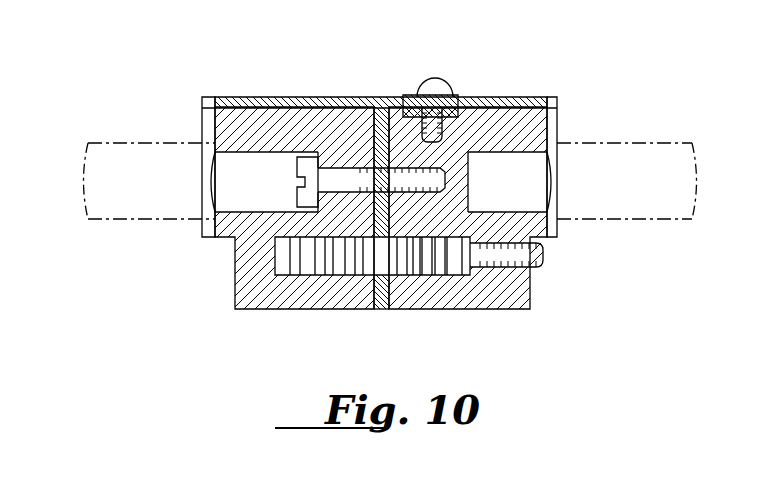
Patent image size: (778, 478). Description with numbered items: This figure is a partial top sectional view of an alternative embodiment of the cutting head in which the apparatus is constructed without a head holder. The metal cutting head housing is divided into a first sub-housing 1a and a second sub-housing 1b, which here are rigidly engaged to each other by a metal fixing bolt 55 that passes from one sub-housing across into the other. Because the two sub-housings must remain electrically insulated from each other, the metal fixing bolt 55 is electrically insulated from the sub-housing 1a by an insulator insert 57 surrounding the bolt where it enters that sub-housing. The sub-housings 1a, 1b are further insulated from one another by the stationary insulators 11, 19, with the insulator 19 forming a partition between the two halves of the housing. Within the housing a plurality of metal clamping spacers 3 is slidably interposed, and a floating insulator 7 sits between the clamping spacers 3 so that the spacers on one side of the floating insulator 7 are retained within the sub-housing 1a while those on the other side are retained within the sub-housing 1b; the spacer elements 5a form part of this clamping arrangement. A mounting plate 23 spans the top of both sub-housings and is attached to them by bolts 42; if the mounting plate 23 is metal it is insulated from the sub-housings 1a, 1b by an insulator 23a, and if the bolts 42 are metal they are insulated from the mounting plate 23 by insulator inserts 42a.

The first sub-housing 1a is at (262, 290).
The second sub-housing 1b is at (508, 285).
The metal clamping spacers 3 is at (318, 262).
The spring plates 5a is at (346, 268).
The floating insulator 7 is at (375, 255).
The stationary insulator 11 is at (381, 300).
The stationary insulator 19 is at (377, 175).
The mounting plate 23 is at (520, 97).
The insulator 23a is at (560, 108).
The bolts 42 is at (438, 80).
The insulator inserts 42a is at (455, 96).
The metal fixing bolt 55 is at (345, 175).
The insulator insert 57 is at (330, 195).